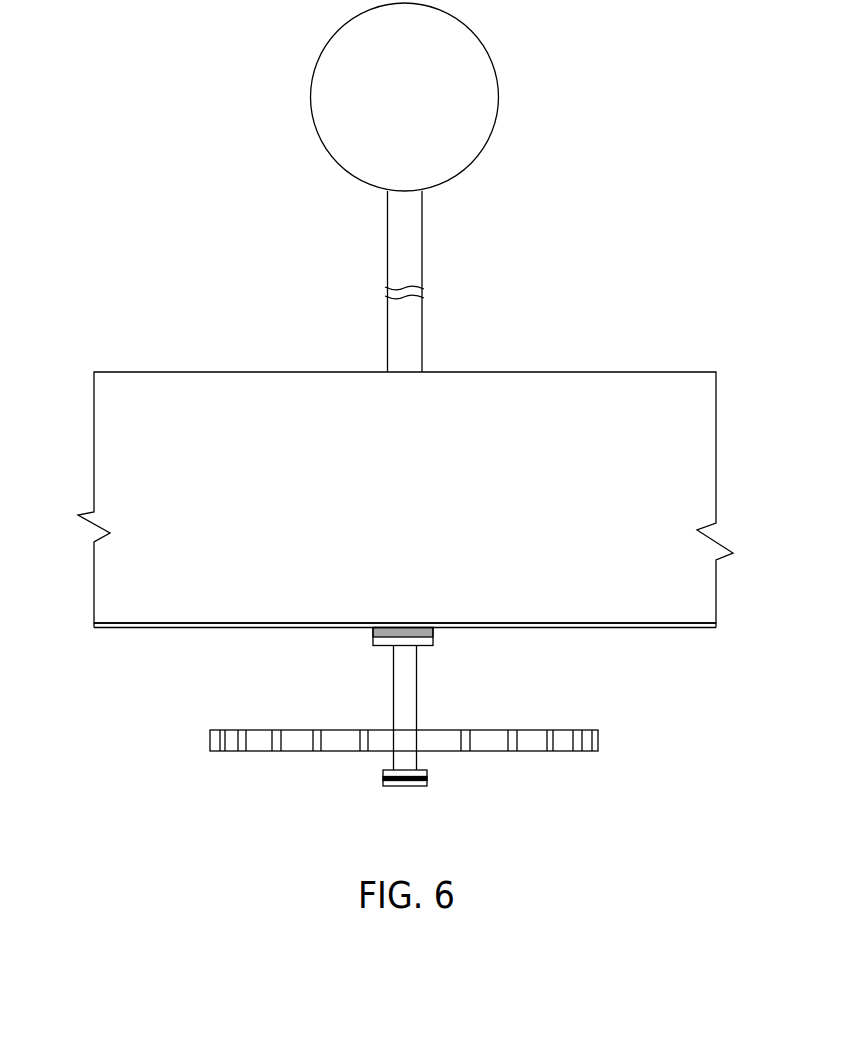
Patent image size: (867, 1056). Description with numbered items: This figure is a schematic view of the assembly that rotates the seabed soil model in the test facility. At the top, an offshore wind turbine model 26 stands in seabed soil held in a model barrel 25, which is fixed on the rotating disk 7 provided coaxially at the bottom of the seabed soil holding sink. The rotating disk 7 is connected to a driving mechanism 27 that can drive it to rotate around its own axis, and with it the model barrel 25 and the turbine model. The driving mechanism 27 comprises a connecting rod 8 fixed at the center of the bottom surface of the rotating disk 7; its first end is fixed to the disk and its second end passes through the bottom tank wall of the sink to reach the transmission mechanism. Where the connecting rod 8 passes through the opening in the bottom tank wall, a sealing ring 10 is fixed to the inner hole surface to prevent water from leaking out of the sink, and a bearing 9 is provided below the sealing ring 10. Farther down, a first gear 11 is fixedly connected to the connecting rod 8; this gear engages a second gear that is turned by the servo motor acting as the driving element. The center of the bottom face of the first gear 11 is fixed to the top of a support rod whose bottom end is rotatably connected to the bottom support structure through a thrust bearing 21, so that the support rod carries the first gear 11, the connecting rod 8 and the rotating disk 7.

The rotating disk 7 is at (190, 627).
The connecting rod 8 is at (417, 691).
The bearing 9 is at (375, 639).
The sealing ring 10 is at (435, 630).
The first gear 11 is at (233, 741).
The thrust bearing 21 is at (417, 784).
The model barrel 25 is at (94, 448).
The offshore wind turbine model 26 is at (423, 275).
The driving mechanism 27 is at (527, 681).